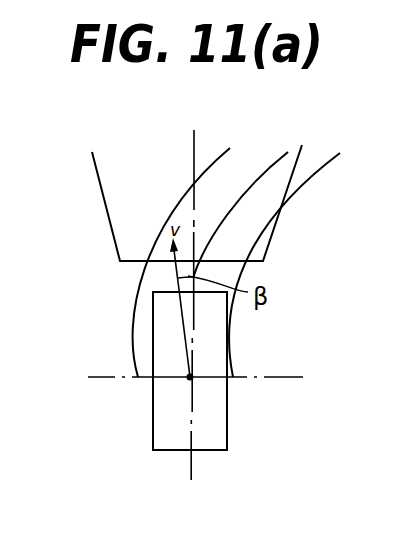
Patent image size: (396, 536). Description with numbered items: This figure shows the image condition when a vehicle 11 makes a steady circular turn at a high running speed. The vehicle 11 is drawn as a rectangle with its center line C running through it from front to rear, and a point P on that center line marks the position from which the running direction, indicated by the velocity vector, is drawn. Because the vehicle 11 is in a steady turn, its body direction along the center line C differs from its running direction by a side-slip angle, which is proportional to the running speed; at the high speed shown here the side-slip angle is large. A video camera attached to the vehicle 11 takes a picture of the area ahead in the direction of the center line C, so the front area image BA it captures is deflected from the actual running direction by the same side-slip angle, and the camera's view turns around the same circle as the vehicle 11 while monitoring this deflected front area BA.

The vehicle 11 is at (153, 410).
The front area image BA is at (122, 207).
The center line C is at (194, 306).
The reference point P is at (199, 362).